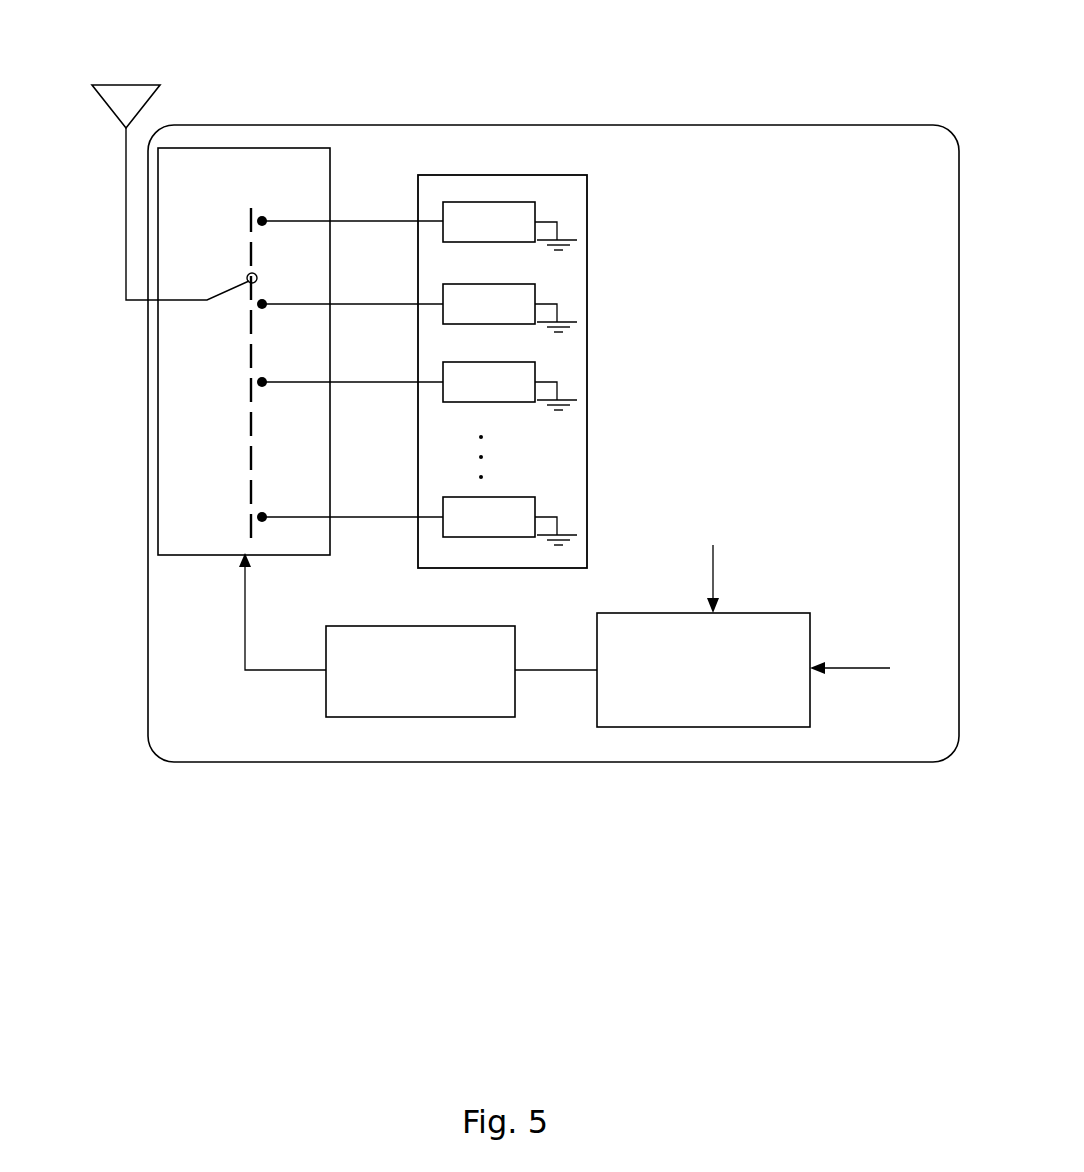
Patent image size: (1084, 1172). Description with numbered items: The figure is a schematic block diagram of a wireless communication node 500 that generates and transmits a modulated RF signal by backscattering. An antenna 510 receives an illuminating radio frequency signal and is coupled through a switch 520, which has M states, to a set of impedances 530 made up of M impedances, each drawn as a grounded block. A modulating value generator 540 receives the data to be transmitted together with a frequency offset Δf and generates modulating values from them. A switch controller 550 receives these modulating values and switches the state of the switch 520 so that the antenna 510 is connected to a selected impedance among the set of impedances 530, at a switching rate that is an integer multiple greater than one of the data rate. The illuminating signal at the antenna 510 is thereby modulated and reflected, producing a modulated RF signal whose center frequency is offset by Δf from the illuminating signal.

The wireless communication node 500 is at (500, 804).
The antenna 510 is at (118, 88).
The switch 520 is at (190, 500).
The set of impedances 530 is at (487, 193).
The modulating value generator 540 is at (712, 718).
The switch controller 550 is at (388, 705).